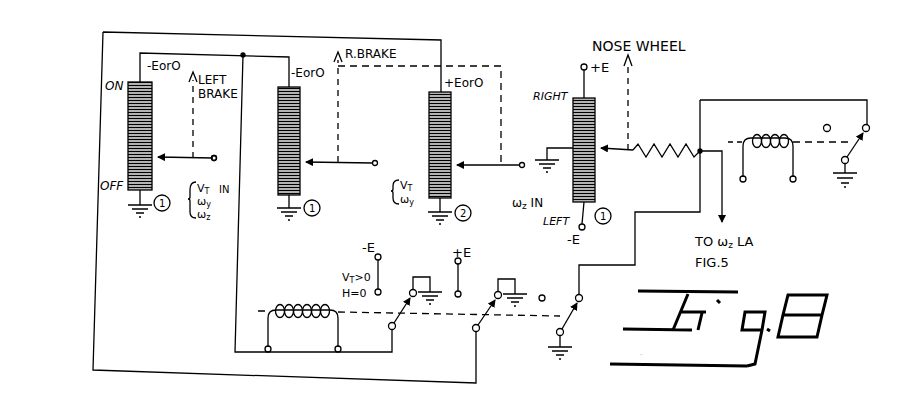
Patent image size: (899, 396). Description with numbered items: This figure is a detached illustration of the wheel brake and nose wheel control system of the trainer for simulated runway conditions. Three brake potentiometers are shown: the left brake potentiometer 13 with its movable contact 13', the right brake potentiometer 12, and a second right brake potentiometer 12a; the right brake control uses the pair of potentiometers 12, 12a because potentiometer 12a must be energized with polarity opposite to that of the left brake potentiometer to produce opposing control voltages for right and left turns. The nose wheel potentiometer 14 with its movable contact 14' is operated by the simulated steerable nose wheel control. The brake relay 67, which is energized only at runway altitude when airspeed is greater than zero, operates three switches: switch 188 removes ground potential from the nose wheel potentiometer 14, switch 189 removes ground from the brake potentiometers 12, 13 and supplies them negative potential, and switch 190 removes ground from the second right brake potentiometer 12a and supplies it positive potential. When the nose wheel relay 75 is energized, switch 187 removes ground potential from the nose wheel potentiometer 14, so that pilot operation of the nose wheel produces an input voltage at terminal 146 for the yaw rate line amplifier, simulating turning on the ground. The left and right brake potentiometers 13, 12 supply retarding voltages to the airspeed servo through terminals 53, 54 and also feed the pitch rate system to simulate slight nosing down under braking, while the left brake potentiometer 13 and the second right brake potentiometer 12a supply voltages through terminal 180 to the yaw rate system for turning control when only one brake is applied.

The right brake potentiometer 12 is at (300, 128).
The #2 right brake potentiometer 12a is at (451, 138).
The left brake potentiometer 13 is at (156, 136).
The movable contact of left brake potentiometer 13' is at (186, 148).
The nose wheel potentiometer 14 is at (597, 150).
The movable contact of nose wheel potentiometer 14' is at (616, 160).
The input terminal 53 is at (216, 161).
The input terminal 54 is at (372, 166).
The brake relay 67 is at (309, 304).
The nose wheel relay 75 is at (789, 134).
The input terminal 146 is at (701, 149).
The input terminal 180 is at (518, 170).
The nose wheel relay switch 187 is at (856, 160).
The brake relay switch 188 is at (570, 331).
The brake relay switch 189 is at (402, 324).
The brake relay switch 190 is at (486, 327).